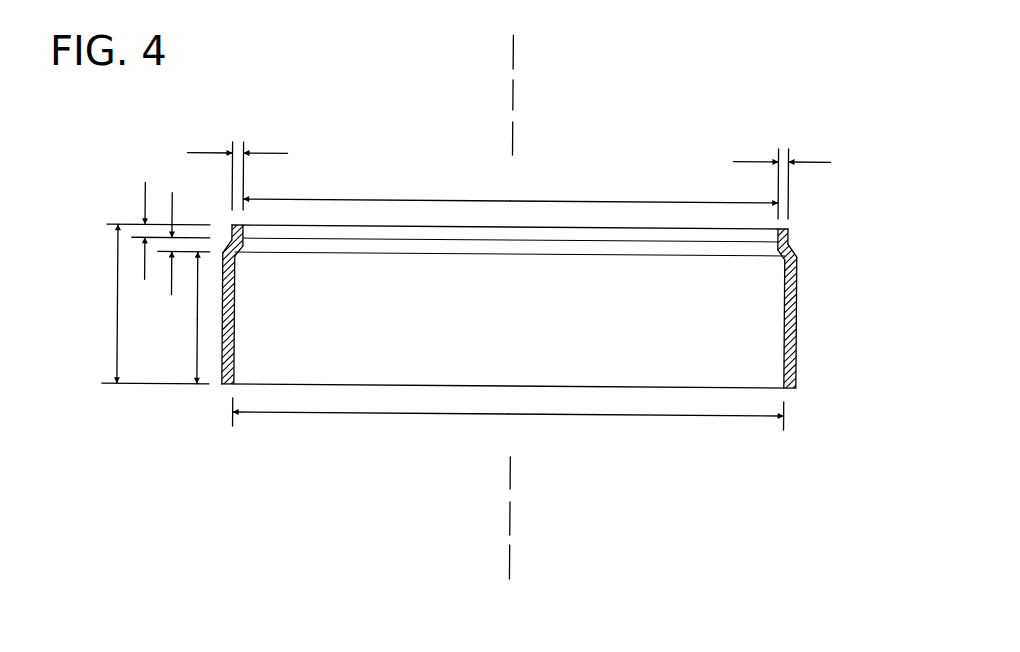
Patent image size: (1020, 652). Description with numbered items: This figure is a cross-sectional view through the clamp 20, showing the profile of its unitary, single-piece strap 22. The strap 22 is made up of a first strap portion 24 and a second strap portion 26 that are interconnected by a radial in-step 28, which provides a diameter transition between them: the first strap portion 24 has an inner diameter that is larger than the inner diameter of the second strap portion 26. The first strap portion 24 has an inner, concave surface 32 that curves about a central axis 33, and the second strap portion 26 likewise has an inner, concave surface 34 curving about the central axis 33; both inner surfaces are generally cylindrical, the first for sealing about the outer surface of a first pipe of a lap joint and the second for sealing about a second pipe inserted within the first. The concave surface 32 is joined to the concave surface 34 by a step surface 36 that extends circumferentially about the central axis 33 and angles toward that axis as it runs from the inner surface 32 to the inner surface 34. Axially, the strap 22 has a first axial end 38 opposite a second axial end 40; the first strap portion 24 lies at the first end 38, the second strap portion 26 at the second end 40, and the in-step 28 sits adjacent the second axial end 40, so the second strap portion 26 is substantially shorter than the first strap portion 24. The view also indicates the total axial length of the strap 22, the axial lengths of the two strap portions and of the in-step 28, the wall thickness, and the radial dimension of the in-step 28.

The clamp 20 is at (512, 302).
The strap 22 is at (799, 306).
The first strap portion 24 is at (798, 341).
The second strap portion 26 is at (791, 236).
The radial in-step 28 is at (798, 250).
The inner concave surface 32 is at (236, 355).
The central axis 33 is at (512, 51).
The inner concave surface 34 is at (244, 232).
The step surface 36 is at (236, 248).
The first axial end 38 is at (391, 385).
The second axial end 40 is at (583, 228).